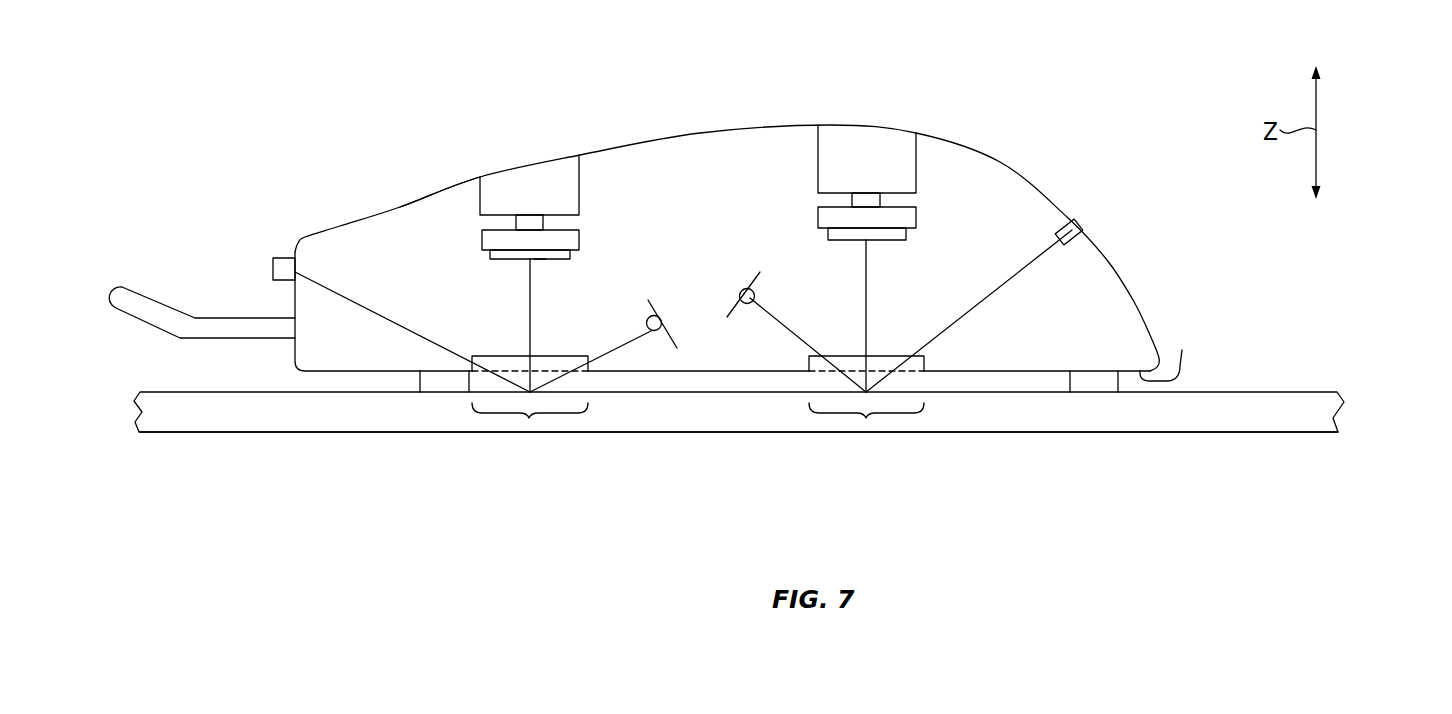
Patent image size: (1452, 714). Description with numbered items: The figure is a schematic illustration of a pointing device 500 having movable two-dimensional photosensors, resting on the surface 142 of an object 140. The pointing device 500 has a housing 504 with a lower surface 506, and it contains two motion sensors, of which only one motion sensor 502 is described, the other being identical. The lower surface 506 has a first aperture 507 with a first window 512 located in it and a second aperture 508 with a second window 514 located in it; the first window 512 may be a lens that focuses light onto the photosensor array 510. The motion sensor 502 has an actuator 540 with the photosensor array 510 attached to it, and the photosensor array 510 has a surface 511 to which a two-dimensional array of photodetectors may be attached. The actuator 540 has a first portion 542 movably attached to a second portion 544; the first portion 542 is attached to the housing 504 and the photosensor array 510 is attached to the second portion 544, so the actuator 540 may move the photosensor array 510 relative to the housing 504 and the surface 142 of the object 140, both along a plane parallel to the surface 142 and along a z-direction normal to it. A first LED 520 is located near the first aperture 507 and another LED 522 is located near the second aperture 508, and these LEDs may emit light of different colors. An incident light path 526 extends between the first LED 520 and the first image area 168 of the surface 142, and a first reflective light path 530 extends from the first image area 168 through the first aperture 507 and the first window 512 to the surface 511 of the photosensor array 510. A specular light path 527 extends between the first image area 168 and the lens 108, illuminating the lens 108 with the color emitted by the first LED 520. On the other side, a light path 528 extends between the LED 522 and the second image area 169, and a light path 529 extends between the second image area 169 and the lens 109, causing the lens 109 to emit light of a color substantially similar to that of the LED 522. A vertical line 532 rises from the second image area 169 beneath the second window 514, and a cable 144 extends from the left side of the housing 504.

The pointing device 500 is at (1066, 79).
The motion sensor 502 is at (447, 226).
The housing 504 is at (850, 117).
The lower surface 506 is at (1182, 350).
The first aperture 507 is at (520, 378).
The second aperture 508 is at (860, 378).
The photosensor array 510 is at (571, 256).
The surface 511 is at (541, 262).
The first window 512 is at (560, 356).
The second window 514 is at (892, 353).
The first LED 520 is at (664, 322).
The LED 522 is at (741, 290).
The incident light path 526 is at (623, 343).
The specular light path 527 is at (412, 314).
The light path 528 is at (778, 327).
The light path 529 is at (1003, 287).
The first reflective light path 530 is at (528, 287).
The second reflected beam axis 532 is at (866, 276).
The actuator 540 is at (604, 216).
The first portion 542 is at (579, 172).
The second portion 544 is at (579, 238).
The lens 108 is at (270, 266).
The lens 109 is at (1085, 224).
The object 140 is at (1360, 409).
The surface 142 is at (1302, 390).
The cable 144 is at (168, 305).
The first image area 168 is at (529, 418).
The second image area 169 is at (866, 418).